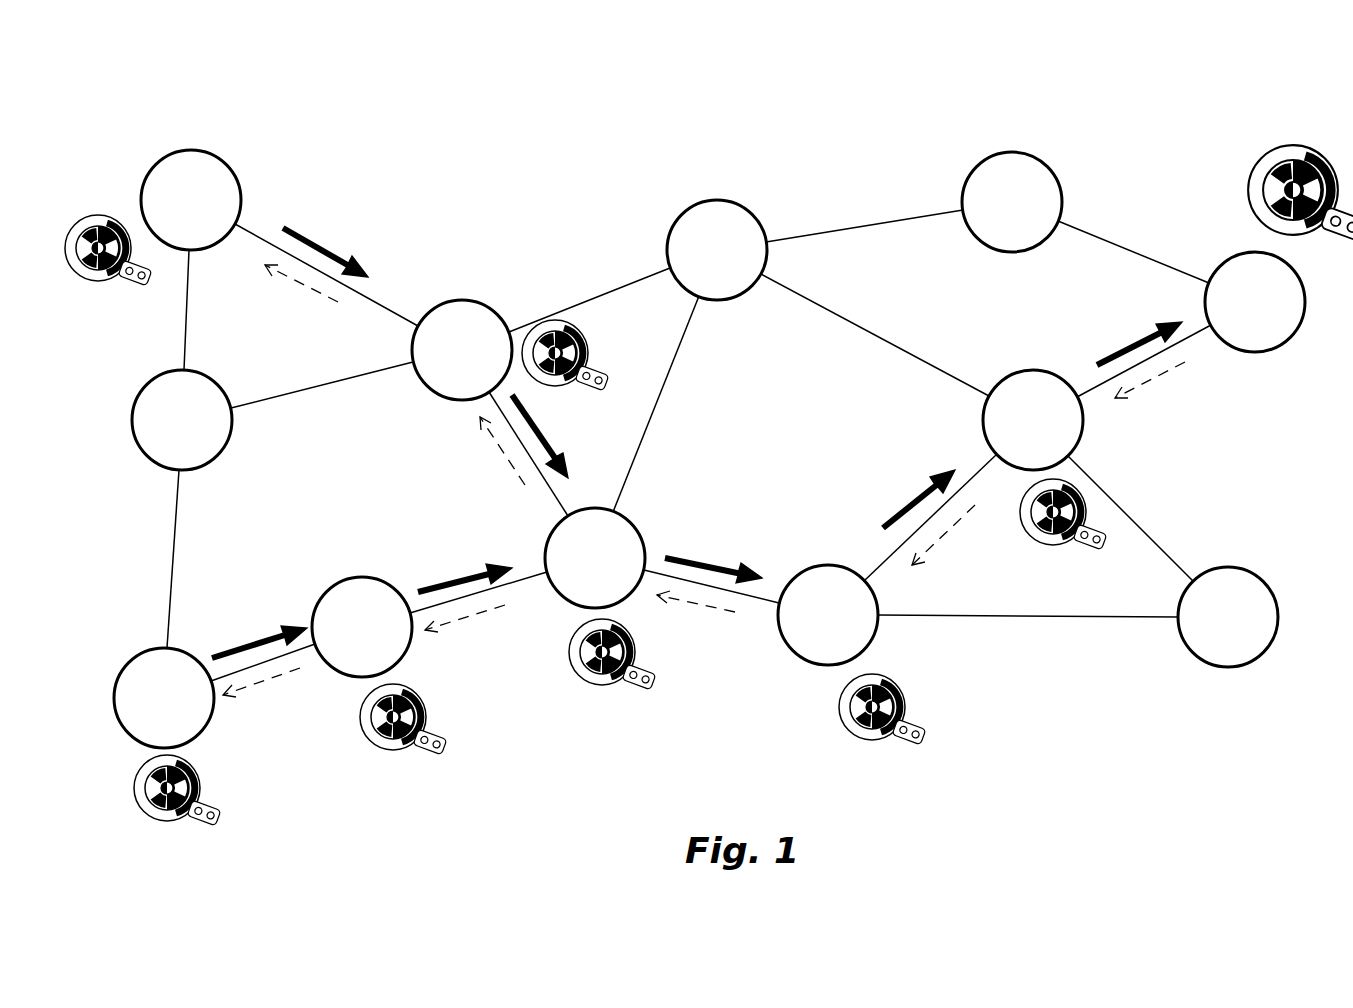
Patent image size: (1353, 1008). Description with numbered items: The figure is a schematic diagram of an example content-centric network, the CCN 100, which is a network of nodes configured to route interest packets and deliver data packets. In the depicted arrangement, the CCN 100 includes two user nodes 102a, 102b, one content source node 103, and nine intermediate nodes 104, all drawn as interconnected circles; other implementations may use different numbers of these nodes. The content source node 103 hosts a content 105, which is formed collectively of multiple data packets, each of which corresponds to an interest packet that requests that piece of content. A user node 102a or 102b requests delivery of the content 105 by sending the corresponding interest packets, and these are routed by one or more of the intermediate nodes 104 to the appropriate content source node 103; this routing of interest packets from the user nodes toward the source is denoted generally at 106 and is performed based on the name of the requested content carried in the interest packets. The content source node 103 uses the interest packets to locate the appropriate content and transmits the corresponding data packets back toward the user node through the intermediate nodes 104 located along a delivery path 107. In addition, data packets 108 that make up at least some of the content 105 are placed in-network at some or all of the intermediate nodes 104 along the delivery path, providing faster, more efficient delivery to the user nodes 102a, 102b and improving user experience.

The CCN 100 is at (125, 94).
The user node 102a is at (170, 212).
The user node 102b is at (143, 710).
The content source node 103 is at (1239, 314).
The intermediate node 104 is at (705, 414).
The content 105 is at (1293, 143).
The routing of interest packets 106 is at (690, 436).
The delivery path 107 is at (721, 487).
The data packets 108 is at (579, 507).